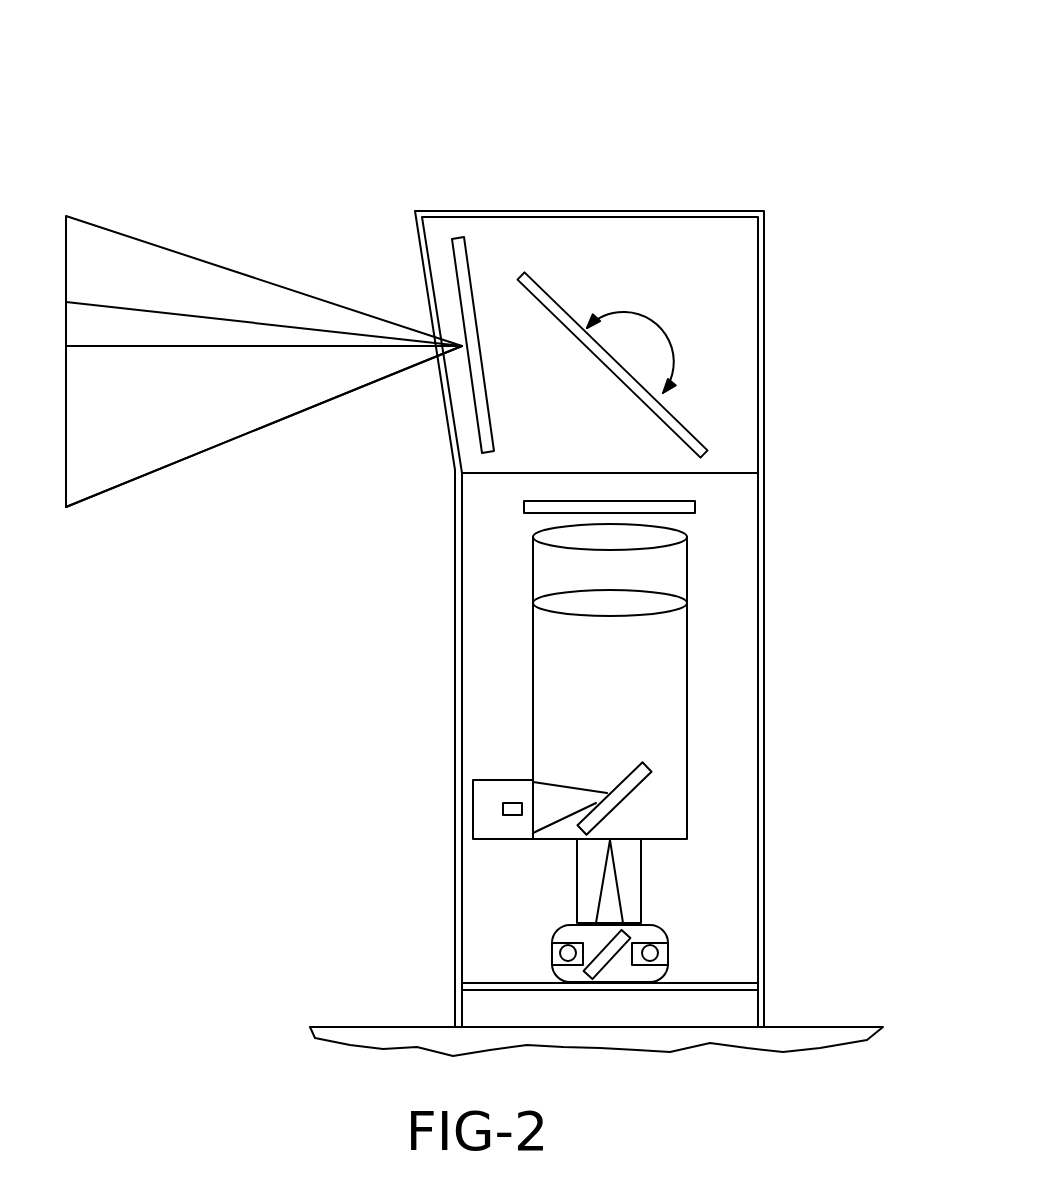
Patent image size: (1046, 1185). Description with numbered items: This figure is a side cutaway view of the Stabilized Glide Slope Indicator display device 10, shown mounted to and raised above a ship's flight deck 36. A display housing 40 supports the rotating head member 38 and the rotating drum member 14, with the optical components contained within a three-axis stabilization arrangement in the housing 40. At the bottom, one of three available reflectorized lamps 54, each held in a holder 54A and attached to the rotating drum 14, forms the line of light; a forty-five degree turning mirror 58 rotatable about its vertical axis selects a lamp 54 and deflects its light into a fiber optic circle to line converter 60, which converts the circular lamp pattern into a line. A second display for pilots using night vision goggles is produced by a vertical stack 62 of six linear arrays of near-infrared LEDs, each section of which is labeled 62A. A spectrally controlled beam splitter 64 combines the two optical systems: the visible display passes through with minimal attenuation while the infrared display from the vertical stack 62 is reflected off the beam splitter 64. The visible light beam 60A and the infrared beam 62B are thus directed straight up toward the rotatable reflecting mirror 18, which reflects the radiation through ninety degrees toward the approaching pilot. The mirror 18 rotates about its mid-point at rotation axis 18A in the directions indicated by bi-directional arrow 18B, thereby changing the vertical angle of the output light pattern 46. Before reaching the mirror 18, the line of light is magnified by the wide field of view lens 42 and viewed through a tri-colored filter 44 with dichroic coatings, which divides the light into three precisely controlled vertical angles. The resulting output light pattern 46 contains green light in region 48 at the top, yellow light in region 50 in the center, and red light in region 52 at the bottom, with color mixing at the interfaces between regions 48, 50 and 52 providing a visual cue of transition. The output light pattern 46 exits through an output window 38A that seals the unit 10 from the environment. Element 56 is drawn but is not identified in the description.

The Stabilized Glide Slope Indicator (SGSI) display device 10 is at (605, 115).
The rotating drum member 14 is at (688, 690).
The rotatable reflecting mirror 18 is at (678, 308).
The rotation axis 18A is at (612, 376).
The bi-directional arrow 18B is at (663, 333).
The ship's flight deck 36 is at (820, 1025).
The rotating head member 38 is at (688, 208).
The output window 38A is at (462, 246).
The display housing 40 is at (455, 680).
The wide field of view lens 42 is at (532, 602).
The tri-colored filter 44 is at (695, 507).
The output light pattern 46 is at (125, 235).
The green color region 48 is at (227, 297).
The yellow light region 50 is at (282, 340).
The red light region 52 is at (227, 405).
The reflectorized lamp 54 is at (540, 957).
The lamp holder 54A is at (562, 950).
The bottom plate 56 is at (710, 980).
The turning mirror 58 is at (608, 957).
The fiber optic circle to line converter 60 is at (642, 887).
The visible light beam 60A is at (598, 897).
The vertical stack 62 is at (472, 808).
The vertical stack section 62A is at (510, 810).
The infrared radiation beam 62B is at (568, 788).
The spectrally controlled beam splitter 64 is at (645, 765).